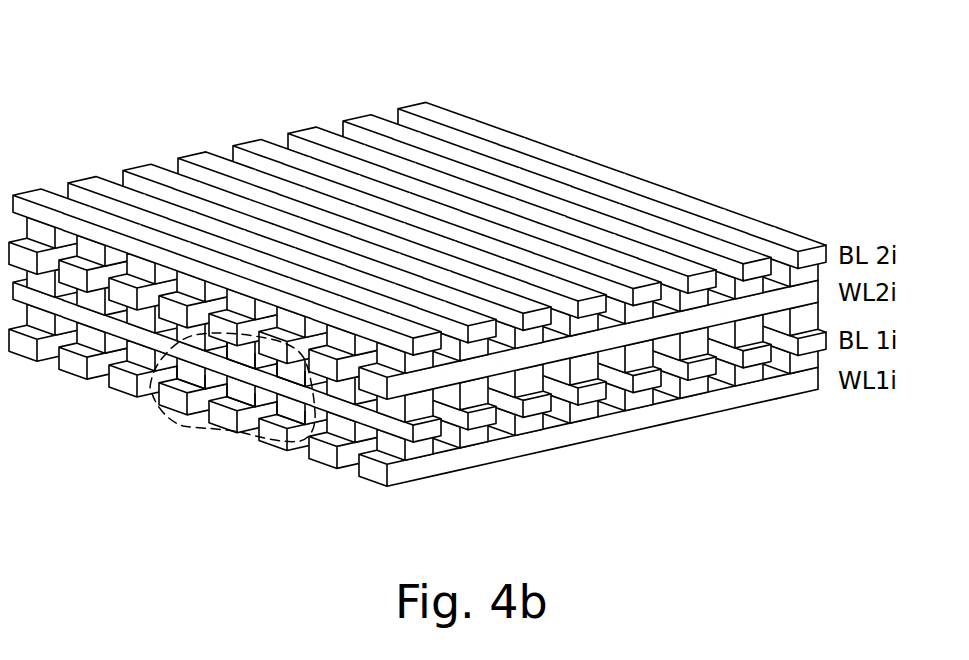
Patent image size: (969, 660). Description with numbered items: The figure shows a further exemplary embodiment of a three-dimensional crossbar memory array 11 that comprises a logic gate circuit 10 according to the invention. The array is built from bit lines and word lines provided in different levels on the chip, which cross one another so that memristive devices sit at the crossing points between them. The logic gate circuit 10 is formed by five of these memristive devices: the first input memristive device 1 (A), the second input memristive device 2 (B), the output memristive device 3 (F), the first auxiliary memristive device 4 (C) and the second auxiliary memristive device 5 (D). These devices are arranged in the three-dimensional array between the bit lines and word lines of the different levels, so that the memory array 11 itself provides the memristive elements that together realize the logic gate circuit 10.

The memory array 11 is at (162, 93).
The logic gate circuit 10 is at (197, 432).
The first input memristive device 1 is at (240, 356).
The second input memristive device 2 is at (285, 418).
The output memristive device 3 is at (290, 376).
The first auxiliary memristive device 4 is at (224, 392).
The second auxiliary memristive device 5 is at (181, 378).